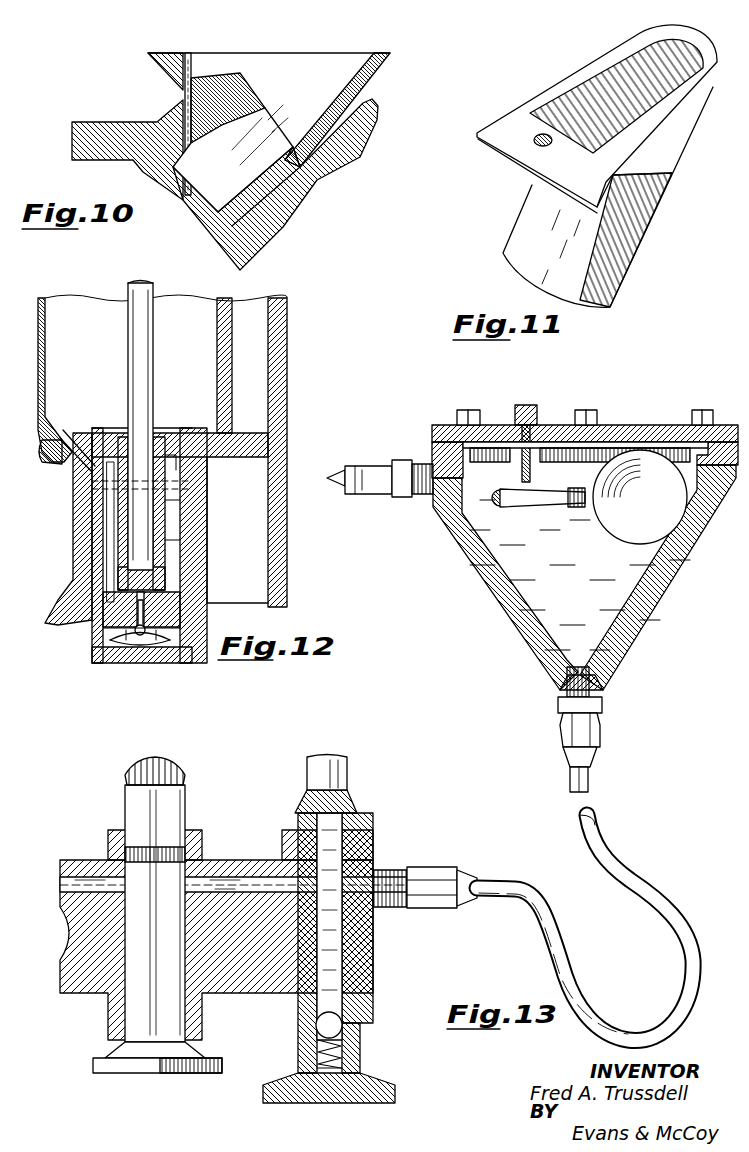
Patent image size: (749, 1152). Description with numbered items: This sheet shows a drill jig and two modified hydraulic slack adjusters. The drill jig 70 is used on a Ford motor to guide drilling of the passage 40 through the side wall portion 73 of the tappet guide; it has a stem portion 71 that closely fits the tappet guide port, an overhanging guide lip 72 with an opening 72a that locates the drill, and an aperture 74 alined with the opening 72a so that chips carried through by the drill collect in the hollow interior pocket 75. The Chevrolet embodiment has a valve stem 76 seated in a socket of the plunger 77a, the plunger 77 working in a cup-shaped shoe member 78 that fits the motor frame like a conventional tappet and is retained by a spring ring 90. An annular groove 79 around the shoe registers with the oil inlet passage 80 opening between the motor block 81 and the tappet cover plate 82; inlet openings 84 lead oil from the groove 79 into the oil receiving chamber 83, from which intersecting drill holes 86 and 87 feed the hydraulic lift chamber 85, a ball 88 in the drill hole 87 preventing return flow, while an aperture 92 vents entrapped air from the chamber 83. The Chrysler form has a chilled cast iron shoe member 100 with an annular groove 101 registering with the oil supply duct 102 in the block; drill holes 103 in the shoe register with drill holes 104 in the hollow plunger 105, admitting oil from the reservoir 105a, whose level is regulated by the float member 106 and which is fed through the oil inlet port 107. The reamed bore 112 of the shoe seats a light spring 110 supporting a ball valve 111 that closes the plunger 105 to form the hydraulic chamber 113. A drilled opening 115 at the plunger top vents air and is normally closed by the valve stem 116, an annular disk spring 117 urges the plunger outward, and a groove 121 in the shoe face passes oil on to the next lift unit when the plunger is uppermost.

In FIG. 10, the passage 40 is at (192, 94).
In FIG. 10, the drill jig 70 is at (377, 72).
In FIG. 11, the drill jig 70 is at (607, 50).
In FIG. 10, the stem portion 71 is at (303, 206).
In FIG. 10, the overhanging guide lip 72 is at (166, 52).
In FIG. 11, the overhanging guide lip 72 is at (527, 170).
In FIG. 10, the opening 72a is at (190, 52).
In FIG. 11, the opening 72a is at (538, 137).
In FIG. 10, the side wall portion 73 is at (213, 80).
In FIG. 10, the aperture 74 is at (200, 134).
In FIG. 10, the hollow interior pocket 75 is at (270, 149).
In FIG. 12, the valve stem 76 is at (127, 347).
In FIG. 12, the plunger 77 is at (148, 573).
In FIG. 12, the plunger 77a is at (187, 538).
In FIG. 12, the cup-shaped shoe member 78 is at (193, 657).
In FIG. 12, the annular groove 79 is at (188, 484).
In FIG. 12, the oil inlet passage 80 is at (90, 457).
In FIG. 12, the motor block 81 is at (231, 303).
In FIG. 12, the tappet cover plate 82 is at (45, 342).
In FIG. 12, the oil receiving chamber 83 is at (90, 542).
In FIG. 12, the inlet openings 84 is at (175, 498).
In FIG. 12, the hydraulic lift chamber 85 is at (170, 645).
In FIG. 12, the drill hole 86 is at (163, 591).
In FIG. 12, the drill hole 87 is at (147, 614).
In FIG. 12, the ball 88 is at (130, 627).
In FIG. 12, the spring ring 90 is at (108, 432).
In FIG. 12, the aperture 92 is at (184, 462).
In FIG. 13, the shoe member 100 is at (140, 1019).
In FIG. 13, the annular groove 101 is at (280, 863).
In FIG. 13, the oil supply duct 102 is at (210, 853).
In FIG. 13, the drill holes 103 is at (374, 861).
In FIG. 13, the drill holes 104 is at (358, 831).
In FIG. 13, the plunger 105 is at (345, 976).
In FIG. 13, the reservoir 105a is at (646, 629).
In FIG. 13, the float member 106 is at (589, 497).
In FIG. 13, the oil inlet port 107 is at (470, 494).
In FIG. 13, the spring 110 is at (357, 1054).
In FIG. 13, the ball valve 111 is at (343, 1028).
In FIG. 13, the reamed bore 112 is at (333, 951).
In FIG. 13, the hydraulic chamber 113 is at (317, 1043).
In FIG. 13, the drilled opening 115 is at (308, 796).
In FIG. 13, the valve stem 116 is at (307, 773).
In FIG. 13, the annular disk spring 117 is at (128, 783).
In FIG. 13, the groove 121 is at (127, 887).